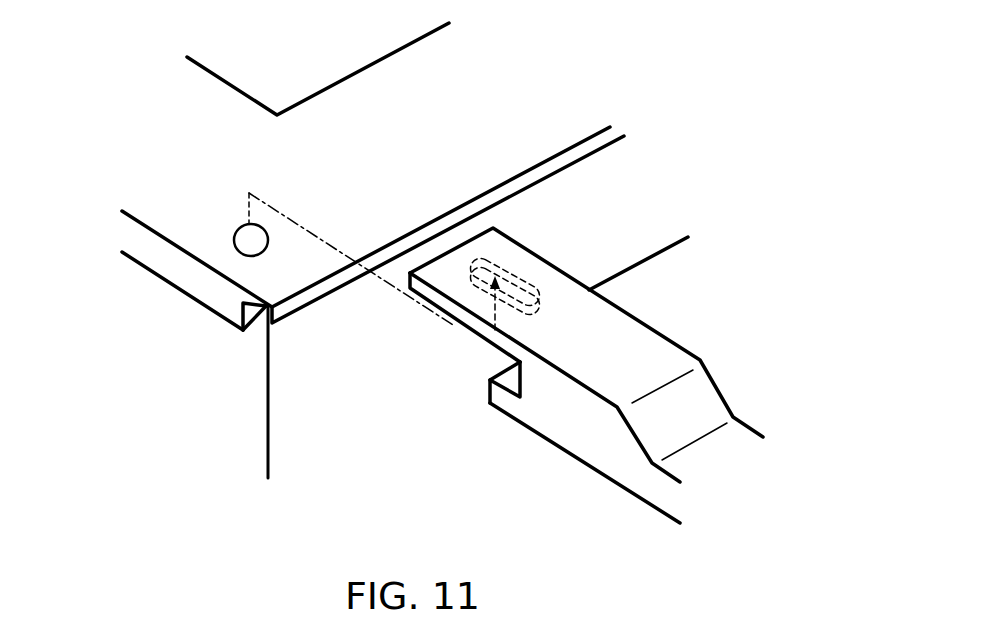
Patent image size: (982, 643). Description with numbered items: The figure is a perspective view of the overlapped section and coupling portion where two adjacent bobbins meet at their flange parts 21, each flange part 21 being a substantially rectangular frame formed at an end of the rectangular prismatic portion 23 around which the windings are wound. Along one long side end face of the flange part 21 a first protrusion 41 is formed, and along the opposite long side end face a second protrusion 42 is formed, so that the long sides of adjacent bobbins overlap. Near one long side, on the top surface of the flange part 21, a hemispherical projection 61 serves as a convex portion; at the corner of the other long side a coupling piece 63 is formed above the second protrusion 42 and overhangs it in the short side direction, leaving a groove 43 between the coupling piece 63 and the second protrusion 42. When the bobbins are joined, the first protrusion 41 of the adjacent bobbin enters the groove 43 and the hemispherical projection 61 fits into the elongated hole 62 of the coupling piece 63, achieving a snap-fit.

The flange part 21 is at (152, 257).
The rectangular prismatic portion 23 is at (298, 423).
The first protrusion 41 is at (260, 310).
The second protrusion 42 is at (503, 398).
The groove 43 is at (503, 374).
The hemispherical projection 61 is at (244, 232).
The elongated hole 62 is at (525, 278).
The coupling piece 63 is at (643, 342).